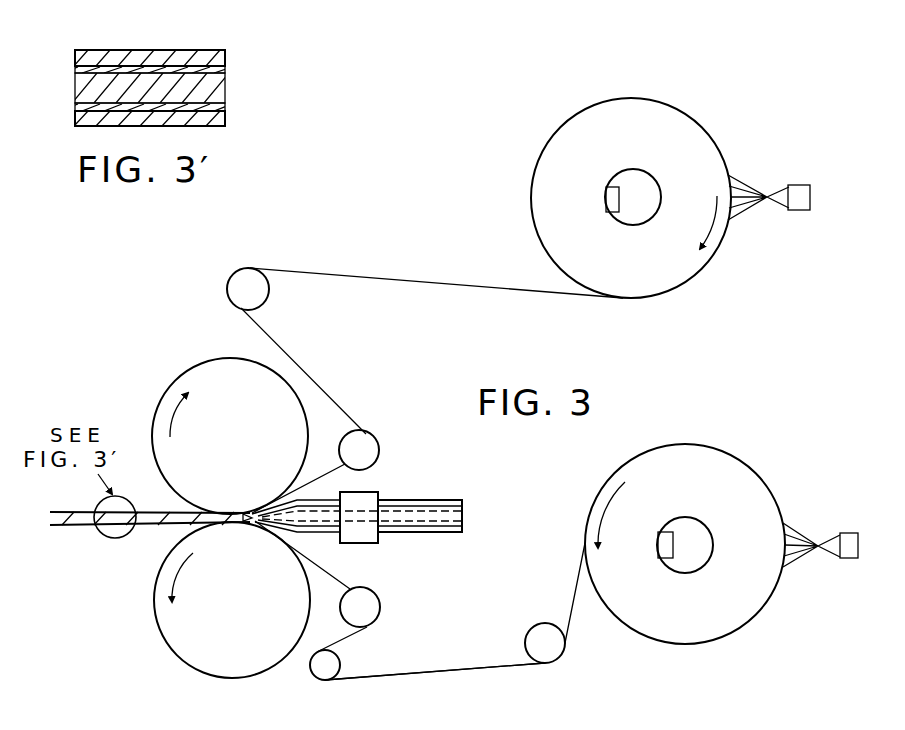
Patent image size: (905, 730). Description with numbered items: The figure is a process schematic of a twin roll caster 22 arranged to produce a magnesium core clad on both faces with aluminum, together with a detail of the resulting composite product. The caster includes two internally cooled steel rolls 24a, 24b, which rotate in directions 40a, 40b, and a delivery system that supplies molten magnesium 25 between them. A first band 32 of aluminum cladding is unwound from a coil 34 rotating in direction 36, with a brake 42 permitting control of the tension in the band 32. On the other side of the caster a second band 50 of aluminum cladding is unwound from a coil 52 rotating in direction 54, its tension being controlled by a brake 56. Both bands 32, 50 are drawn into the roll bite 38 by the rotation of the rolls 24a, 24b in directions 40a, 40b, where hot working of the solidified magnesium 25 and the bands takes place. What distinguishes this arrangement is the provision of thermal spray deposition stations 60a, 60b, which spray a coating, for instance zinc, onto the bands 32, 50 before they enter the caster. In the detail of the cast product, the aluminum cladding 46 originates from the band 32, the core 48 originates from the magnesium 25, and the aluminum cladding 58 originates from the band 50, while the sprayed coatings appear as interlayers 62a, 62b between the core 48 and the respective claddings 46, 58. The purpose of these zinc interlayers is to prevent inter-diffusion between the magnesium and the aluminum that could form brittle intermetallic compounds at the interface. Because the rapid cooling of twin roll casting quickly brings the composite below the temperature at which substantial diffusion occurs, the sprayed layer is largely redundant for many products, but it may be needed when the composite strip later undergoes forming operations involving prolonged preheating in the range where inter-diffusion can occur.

In FIG. 3', the aluminum cladding 46 is at (160, 50).
In FIG. 3', the core 48 is at (75, 92).
In FIG. 3', the aluminum cladding 58 is at (219, 123).
In FIG. 3', the interlayer 62a is at (227, 69).
In FIG. 3', the interlayer 62b is at (227, 107).
In FIG. 3, the coil 34 is at (577, 218).
In FIG. 3, the brake 42 is at (612, 187).
In FIG. 3, the direction 36 is at (708, 221).
In FIG. 3, the thermal spray deposition station 60a is at (806, 212).
In FIG. 3, the band 32 is at (430, 283).
In FIG. 3, the roll bite 38 is at (292, 490).
In FIG. 3, the roll 24a is at (178, 375).
In FIG. 3, the roll 24b is at (177, 652).
In FIG. 3, the direction 40a is at (182, 414).
In FIG. 3, the direction 40b is at (182, 583).
In FIG. 3, the twin roll caster 22 is at (330, 546).
In FIG. 3, the molten magnesium 25 is at (423, 501).
In FIG. 3, the band 50 is at (440, 670).
In FIG. 3, the coil 52 is at (693, 616).
In FIG. 3, the brake 56 is at (668, 532).
In FIG. 3, the direction 54 is at (607, 512).
In FIG. 3, the thermal spray deposition station 60b is at (857, 560).